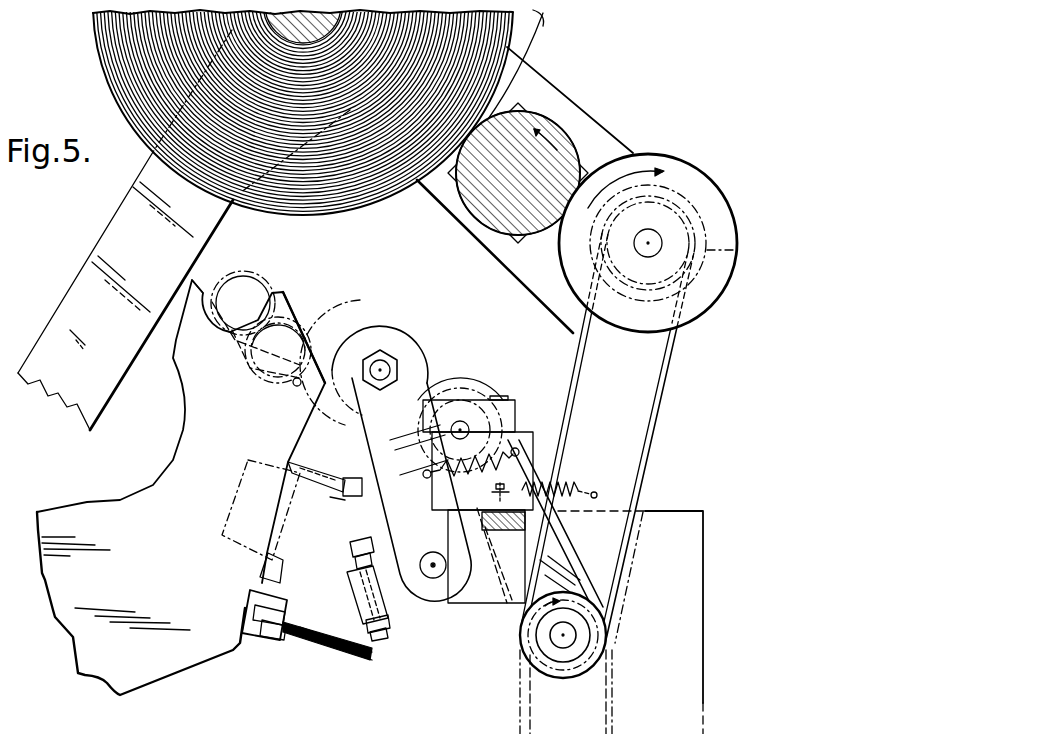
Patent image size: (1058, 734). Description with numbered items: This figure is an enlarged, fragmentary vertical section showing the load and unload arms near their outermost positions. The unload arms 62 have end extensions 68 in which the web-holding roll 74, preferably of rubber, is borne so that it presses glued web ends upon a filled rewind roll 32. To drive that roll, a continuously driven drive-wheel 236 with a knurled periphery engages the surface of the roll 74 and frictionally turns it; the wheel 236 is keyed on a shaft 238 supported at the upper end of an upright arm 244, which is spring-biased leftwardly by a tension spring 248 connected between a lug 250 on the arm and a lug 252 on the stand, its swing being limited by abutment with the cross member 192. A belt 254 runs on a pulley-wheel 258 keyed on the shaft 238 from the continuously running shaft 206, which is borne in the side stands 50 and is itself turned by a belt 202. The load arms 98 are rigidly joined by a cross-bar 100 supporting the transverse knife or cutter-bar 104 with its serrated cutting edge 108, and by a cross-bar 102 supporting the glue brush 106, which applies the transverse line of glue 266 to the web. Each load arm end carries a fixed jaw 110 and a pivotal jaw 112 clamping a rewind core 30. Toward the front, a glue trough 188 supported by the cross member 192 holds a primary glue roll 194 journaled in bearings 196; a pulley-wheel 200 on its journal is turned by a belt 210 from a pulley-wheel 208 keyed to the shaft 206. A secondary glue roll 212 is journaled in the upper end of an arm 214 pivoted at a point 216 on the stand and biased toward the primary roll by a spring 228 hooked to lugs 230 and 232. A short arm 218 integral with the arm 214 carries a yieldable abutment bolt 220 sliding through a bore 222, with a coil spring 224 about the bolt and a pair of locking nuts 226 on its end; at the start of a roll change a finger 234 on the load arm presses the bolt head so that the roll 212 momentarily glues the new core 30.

The filled rewind roll 32 is at (103, 43).
The transverse line of glue 266 is at (548, 12).
The web-holding roll 74 is at (560, 130).
The end extensions 68 is at (473, 228).
The drive-wheel 236 is at (706, 192).
The shaft 238 is at (662, 243).
The pulley-wheel 258 is at (737, 250).
The upright arm 244 is at (648, 347).
The belt 254 is at (678, 378).
The unload arms 62 is at (213, 207).
The pivotal jaw 112 is at (178, 372).
The load arms 98 is at (72, 513).
The rewind core 30 is at (250, 273).
The fixed jaw 110 is at (285, 292).
The knife or cutter-bar 104 is at (325, 470).
The finger 234 is at (347, 480).
The serrated cutting edge 108 is at (342, 500).
The cross-bar 100 is at (290, 562).
The cross-bar 102 is at (262, 635).
The glue brush 106 is at (308, 643).
The arm 214 is at (385, 450).
The secondary glue roll 212 is at (352, 303).
The bore 222 is at (431, 557).
The pivot point 216 is at (437, 573).
The short arm 218 is at (405, 597).
The coil spring 224 is at (352, 558).
The locking nuts 226 is at (393, 615).
The yieldable abutment bolt 220 is at (382, 634).
The primary glue roll 194 is at (470, 385).
The pulley-wheel 200 is at (458, 398).
The bearings 196 is at (512, 400).
The glue trough 188 is at (531, 432).
The cross member 192 is at (524, 525).
The lug 252 is at (505, 533).
The belt 210 is at (548, 533).
The lug 232 is at (519, 452).
The lug 230 is at (427, 478).
The tension spring 248 is at (525, 487).
The lug 250 is at (596, 493).
The spring 228 is at (496, 492).
The pulley-wheel 208 is at (590, 605).
The shaft 206 is at (578, 638).
The side stands 50 is at (685, 514).
The belt 202 is at (614, 690).